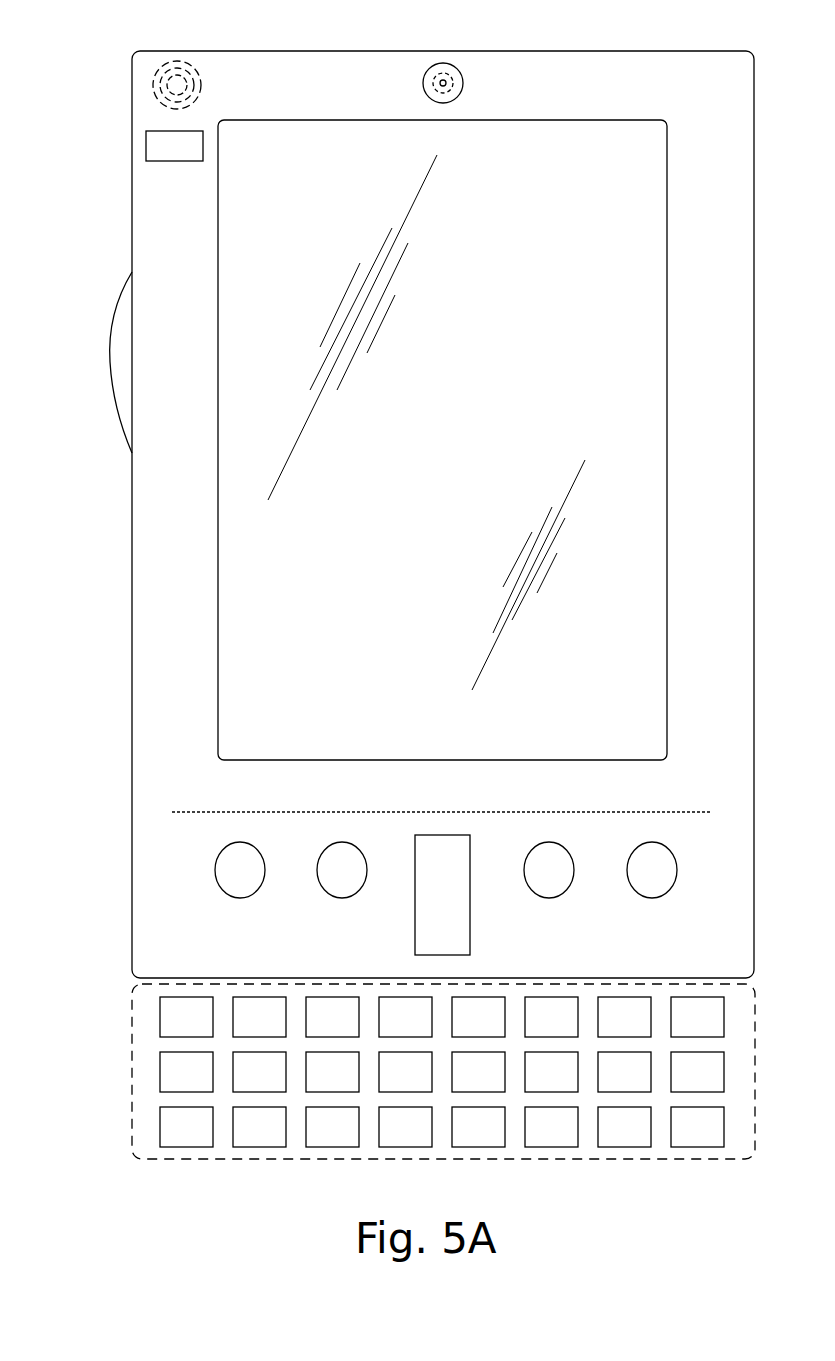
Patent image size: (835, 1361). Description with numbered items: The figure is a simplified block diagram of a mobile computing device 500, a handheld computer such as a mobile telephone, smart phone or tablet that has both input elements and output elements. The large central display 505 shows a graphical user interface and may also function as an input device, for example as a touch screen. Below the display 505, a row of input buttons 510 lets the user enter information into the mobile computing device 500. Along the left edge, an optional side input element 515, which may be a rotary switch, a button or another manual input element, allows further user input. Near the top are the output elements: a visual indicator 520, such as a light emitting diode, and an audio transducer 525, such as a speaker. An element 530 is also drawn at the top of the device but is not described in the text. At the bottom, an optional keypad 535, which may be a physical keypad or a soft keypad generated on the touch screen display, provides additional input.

The mobile computing device 500 is at (722, 51).
The display 505 is at (261, 601).
The input buttons 510 is at (238, 897).
The side input element 515 is at (110, 363).
The visual indicator 520 is at (146, 145).
The audio transducer 525 is at (143, 87).
The camera 530 is at (443, 63).
The keypad 535 is at (132, 1068).